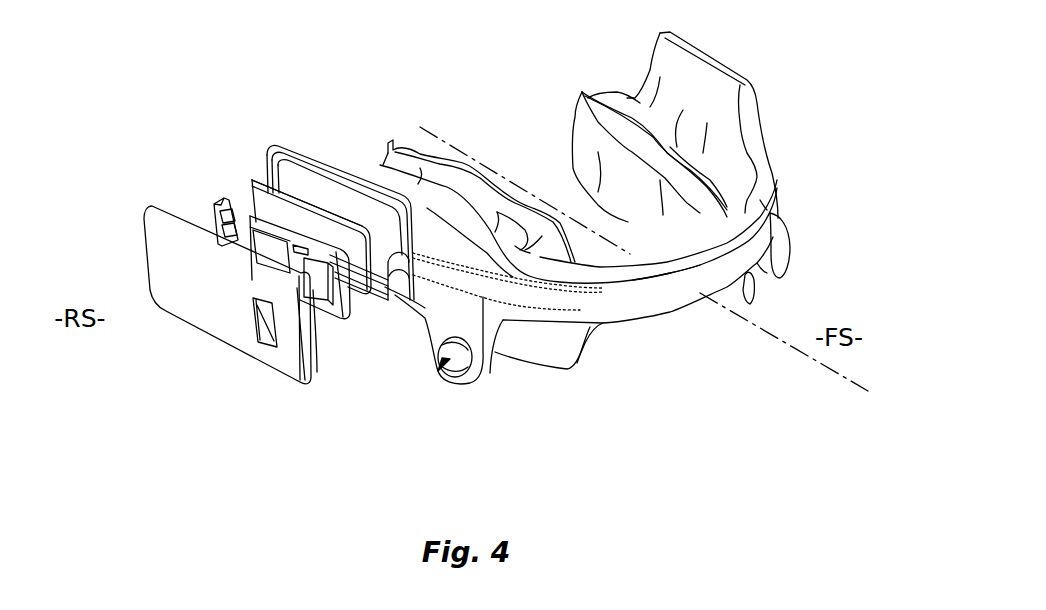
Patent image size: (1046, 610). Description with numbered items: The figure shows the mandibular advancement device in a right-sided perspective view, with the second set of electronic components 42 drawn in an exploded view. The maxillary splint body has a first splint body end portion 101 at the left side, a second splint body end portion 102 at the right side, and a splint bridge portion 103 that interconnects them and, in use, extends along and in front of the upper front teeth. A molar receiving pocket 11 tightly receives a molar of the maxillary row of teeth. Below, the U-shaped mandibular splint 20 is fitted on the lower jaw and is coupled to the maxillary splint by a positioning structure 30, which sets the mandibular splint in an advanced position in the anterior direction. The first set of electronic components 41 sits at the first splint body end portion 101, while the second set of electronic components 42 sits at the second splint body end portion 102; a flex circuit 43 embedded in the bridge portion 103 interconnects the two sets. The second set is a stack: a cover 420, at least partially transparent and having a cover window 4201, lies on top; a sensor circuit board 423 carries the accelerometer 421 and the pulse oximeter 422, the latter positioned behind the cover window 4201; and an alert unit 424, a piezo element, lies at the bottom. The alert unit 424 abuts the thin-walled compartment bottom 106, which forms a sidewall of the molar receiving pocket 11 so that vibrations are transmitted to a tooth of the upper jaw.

The molar receiving pocket 11 is at (400, 163).
The mandibular splint 20 is at (567, 353).
The positioning structure 30 is at (437, 368).
The first set of electronic components 41 is at (712, 50).
The second set of electronic components 42 is at (258, 98).
The flex circuit 43 is at (543, 300).
The first splint body end portion 101 is at (748, 105).
The second splint body end portion 102 is at (411, 300).
The splint bridge portion 103 is at (640, 305).
The compartment bottom 106 is at (308, 182).
The second cover 420 is at (175, 227).
The cover window 4201 is at (267, 340).
The accelerometer 421 is at (262, 218).
The pulse oximeter 422 is at (330, 313).
The sensor circuit board 423 is at (220, 207).
The alert unit 424 is at (263, 178).